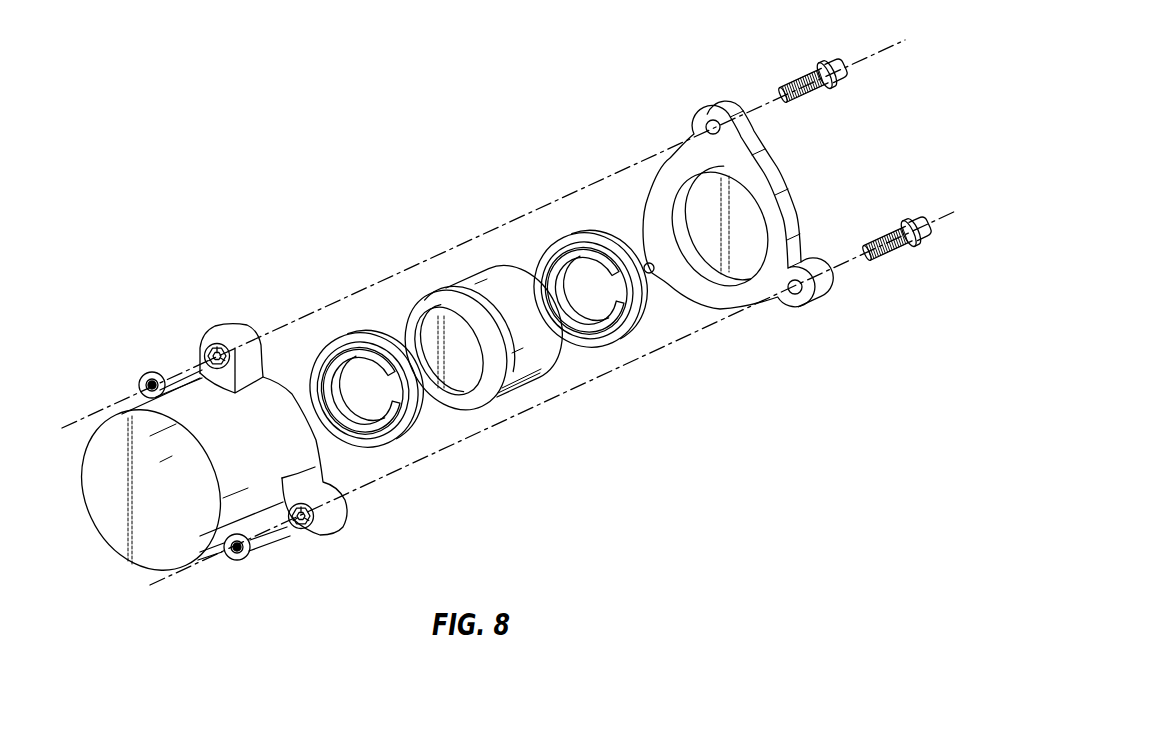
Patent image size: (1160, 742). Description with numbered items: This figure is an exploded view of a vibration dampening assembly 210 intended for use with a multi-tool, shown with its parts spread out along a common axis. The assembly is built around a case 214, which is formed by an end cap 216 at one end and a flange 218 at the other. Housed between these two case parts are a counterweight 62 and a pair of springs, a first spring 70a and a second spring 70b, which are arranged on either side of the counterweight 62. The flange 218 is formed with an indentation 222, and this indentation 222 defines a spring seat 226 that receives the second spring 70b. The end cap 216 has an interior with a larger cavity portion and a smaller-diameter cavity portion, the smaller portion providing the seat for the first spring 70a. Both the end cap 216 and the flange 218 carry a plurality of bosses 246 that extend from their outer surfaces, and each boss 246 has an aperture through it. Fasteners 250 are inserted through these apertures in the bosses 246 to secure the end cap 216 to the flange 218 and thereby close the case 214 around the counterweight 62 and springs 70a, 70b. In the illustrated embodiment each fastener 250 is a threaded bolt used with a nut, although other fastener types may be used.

The vibration dampening assembly 210 is at (337, 198).
The case 214 is at (201, 458).
The end cap 216 is at (136, 408).
The flange 218 is at (734, 205).
The indentation 222 is at (695, 208).
The spring seat 226 is at (700, 197).
The bosses 246 is at (229, 330).
The fastener 250 is at (790, 58).
The counterweight 62 is at (518, 380).
The first spring 70a is at (377, 442).
The second spring 70b is at (626, 334).